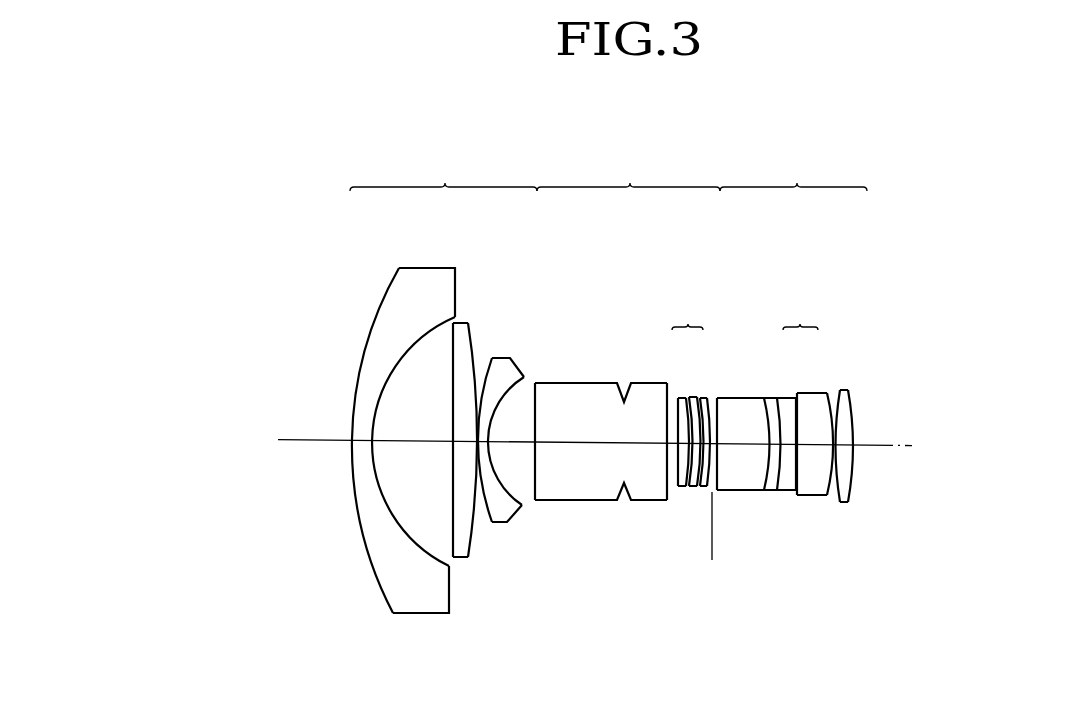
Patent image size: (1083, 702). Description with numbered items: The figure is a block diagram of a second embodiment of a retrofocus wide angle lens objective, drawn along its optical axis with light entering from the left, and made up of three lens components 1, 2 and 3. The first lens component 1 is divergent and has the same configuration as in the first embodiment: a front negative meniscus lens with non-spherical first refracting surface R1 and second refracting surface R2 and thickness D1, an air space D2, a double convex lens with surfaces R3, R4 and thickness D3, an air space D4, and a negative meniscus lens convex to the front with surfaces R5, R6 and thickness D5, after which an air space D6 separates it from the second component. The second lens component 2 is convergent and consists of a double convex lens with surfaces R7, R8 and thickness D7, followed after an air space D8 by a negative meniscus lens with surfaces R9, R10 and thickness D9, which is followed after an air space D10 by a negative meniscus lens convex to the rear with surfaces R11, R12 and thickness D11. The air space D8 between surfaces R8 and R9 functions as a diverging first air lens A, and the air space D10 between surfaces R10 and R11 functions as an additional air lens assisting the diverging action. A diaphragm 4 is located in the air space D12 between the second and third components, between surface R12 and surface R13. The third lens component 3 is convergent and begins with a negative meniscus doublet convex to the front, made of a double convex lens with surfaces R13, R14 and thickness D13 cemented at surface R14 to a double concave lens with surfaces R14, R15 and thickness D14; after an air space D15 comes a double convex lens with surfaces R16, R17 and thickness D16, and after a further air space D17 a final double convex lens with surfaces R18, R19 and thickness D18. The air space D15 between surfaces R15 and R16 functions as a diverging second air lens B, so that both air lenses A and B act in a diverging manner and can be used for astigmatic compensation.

The first lens component 1 is at (443, 174).
The second lens component 2 is at (628, 174).
The third lens component 3 is at (793, 174).
The diaphragm 4 is at (710, 542).
The first air lens A is at (692, 445).
The second air lens B is at (777, 444).
The thickness of front negative meniscus lens D1 is at (390, 446).
The air space D2 is at (413, 429).
The thickness of double convex lens D3 is at (453, 488).
The air space D4 is at (481, 440).
The thickness of negative meniscus lens D5 is at (508, 453).
The air space D6 is at (514, 429).
The thickness of double convex lens D7 is at (601, 480).
The air space D8 is at (677, 442).
The thickness of negative meniscus lens D9 is at (666, 464).
The air space D10 is at (693, 457).
The thickness of negative meniscus lens D11 is at (723, 447).
The air space D12 is at (716, 402).
The thickness of double convex lens D13 is at (760, 494).
The thickness of double concave lens D14 is at (799, 462).
The air space D15 is at (804, 443).
The thickness of double convex lens D16 is at (830, 479).
The air space D17 is at (832, 395).
The thickness of double convex lens D18 is at (875, 463).
The first refracting surface R1 is at (371, 565).
The second refracting surface R2 is at (420, 545).
The third refracting surface R3 is at (448, 543).
The fourth refracting surface R4 is at (468, 550).
The fifth refracting surface R5 is at (490, 522).
The sixth refracting surface R6 is at (514, 498).
The seventh refracting surface R7 is at (535, 490).
The eighth refracting surface R8 is at (667, 478).
The ninth refracting surface R9 is at (677, 470).
The tenth refracting surface R10 is at (686, 488).
The eleventh refracting surface R11 is at (699, 486).
The twelfth refracting surface R12 is at (710, 487).
The thirteenth refracting surface R13 is at (720, 493).
The fourteenth refracting surface R14 is at (760, 490).
The fifteenth refracting surface R15 is at (776, 492).
The sixteenth refracting surface R16 is at (797, 490).
The seventeenth refracting surface R17 is at (830, 498).
The eighteenth refracting surface R18 is at (842, 496).
The nineteenth refracting surface R19 is at (853, 477).